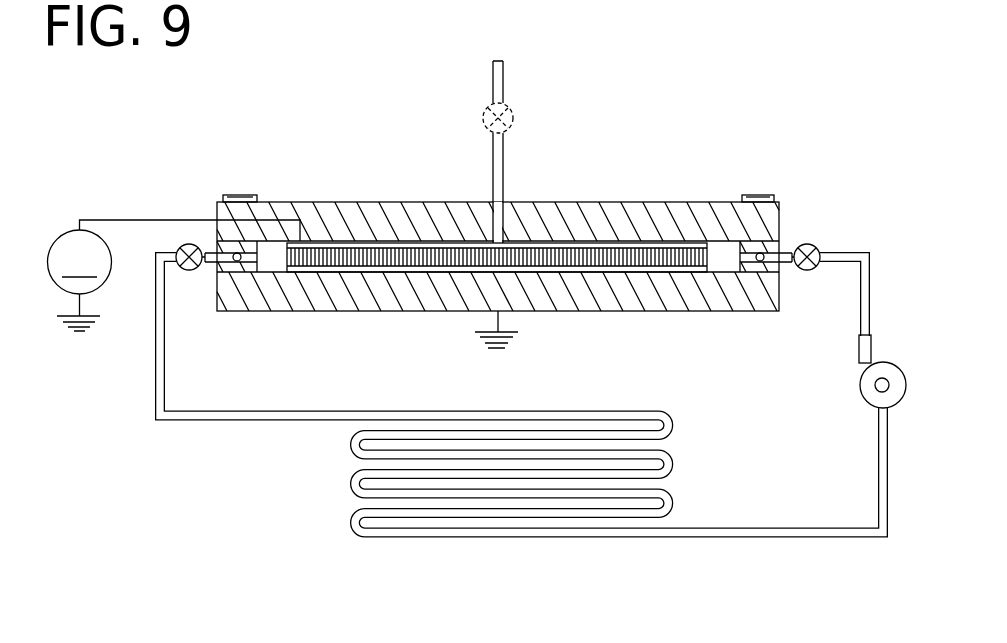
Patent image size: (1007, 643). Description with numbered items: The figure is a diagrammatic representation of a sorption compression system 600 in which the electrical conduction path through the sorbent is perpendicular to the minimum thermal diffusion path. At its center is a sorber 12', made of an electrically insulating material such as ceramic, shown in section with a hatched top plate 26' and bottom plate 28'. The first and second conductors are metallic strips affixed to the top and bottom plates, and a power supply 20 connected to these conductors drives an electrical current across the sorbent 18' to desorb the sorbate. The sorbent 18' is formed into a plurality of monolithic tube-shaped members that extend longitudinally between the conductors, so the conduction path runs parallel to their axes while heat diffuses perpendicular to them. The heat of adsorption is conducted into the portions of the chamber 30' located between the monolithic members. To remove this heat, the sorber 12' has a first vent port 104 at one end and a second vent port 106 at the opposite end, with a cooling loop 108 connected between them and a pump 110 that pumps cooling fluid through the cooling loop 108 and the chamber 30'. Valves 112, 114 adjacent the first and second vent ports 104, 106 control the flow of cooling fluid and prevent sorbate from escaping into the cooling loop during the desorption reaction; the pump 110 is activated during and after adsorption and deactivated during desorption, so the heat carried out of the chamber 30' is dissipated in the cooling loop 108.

The power supply 20 is at (133, 275).
The valve 114 is at (190, 244).
The second vent port 106 is at (212, 266).
The sorber 12' is at (498, 228).
The top plate 26' is at (536, 210).
The bottom plate 28' is at (500, 328).
The sorbent 18' is at (478, 303).
The chamber 30' is at (708, 304).
The first vent port 104 is at (795, 246).
The valve 112 is at (811, 270).
The pump 110 is at (860, 394).
The cooling loop 108 is at (710, 538).
The sorption compression system 600 is at (516, 429).